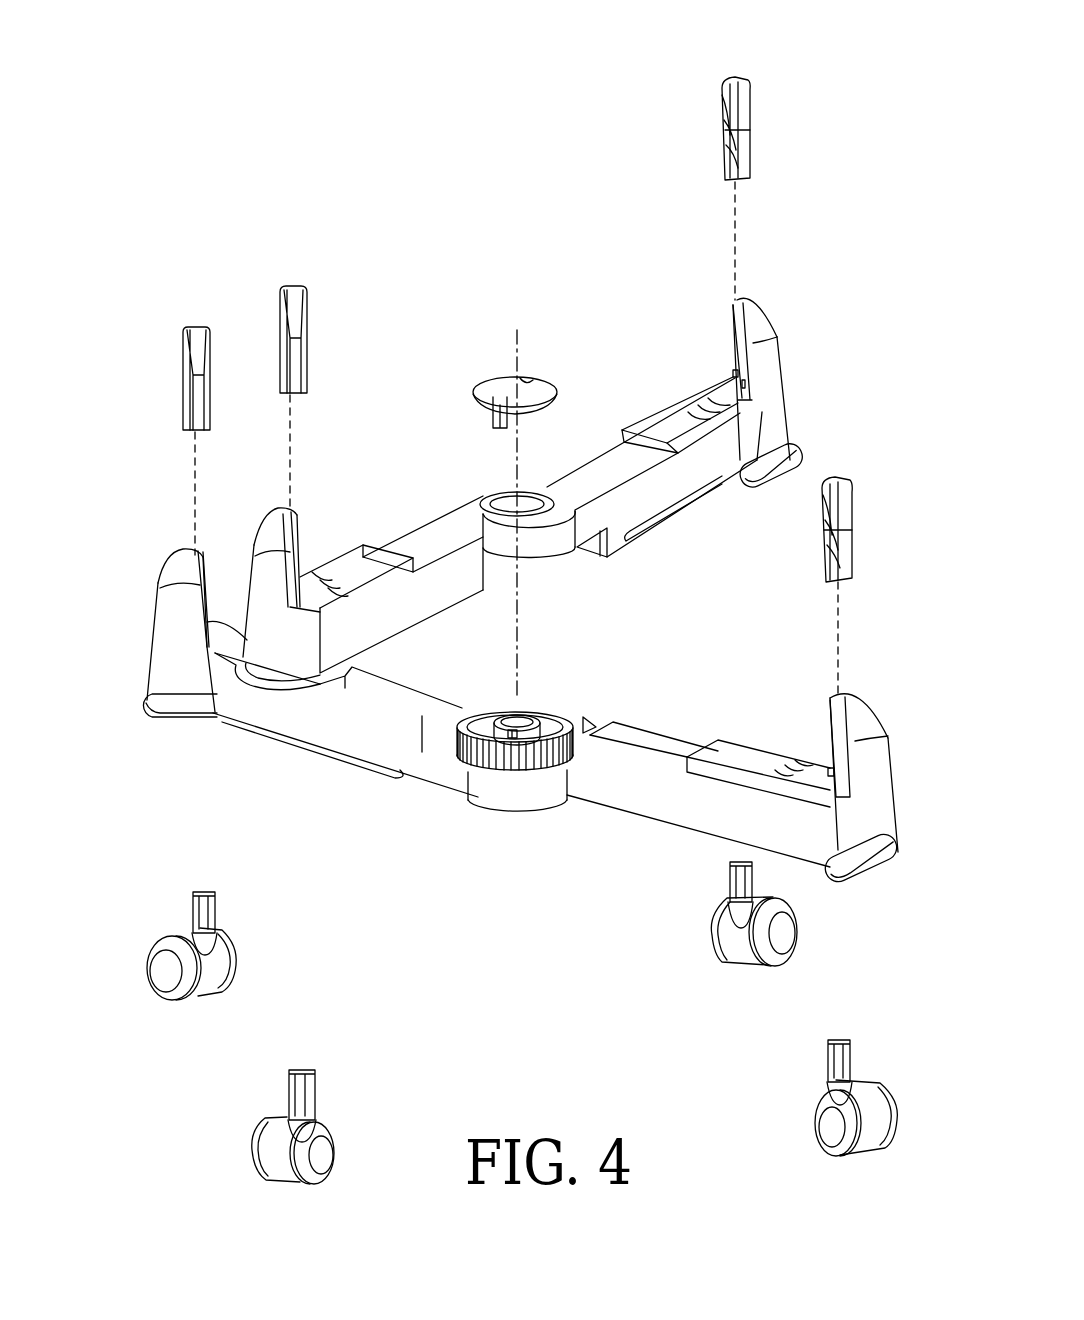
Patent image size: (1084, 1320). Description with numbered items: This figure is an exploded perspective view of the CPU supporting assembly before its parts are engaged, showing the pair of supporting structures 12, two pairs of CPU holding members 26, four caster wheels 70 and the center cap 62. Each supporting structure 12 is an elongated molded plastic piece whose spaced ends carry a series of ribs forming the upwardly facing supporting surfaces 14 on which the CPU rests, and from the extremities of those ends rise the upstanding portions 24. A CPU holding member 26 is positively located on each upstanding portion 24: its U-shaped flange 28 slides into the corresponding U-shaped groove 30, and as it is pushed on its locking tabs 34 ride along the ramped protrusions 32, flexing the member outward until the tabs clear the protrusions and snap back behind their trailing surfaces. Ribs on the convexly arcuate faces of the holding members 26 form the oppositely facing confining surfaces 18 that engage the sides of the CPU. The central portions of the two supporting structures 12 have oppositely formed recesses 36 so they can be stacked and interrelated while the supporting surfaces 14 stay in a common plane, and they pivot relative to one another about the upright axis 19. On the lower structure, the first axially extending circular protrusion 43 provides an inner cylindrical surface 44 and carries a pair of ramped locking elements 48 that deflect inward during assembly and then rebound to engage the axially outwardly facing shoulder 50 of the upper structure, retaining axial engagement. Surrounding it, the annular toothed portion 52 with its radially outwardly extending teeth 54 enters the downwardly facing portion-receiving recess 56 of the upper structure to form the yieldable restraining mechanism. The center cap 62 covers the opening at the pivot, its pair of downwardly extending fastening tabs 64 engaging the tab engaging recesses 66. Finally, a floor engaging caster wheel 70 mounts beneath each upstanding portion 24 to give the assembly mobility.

The supporting structure 12 is at (676, 488).
The upwardly facing supporting surface 14 is at (680, 410).
The confining surface 18 is at (302, 365).
The upright axis 19 is at (518, 333).
The upstanding portion 24 is at (150, 612).
The CPU holding member 26 is at (290, 288).
The U-shaped flange 28 is at (283, 355).
The U-shaped groove 30 is at (292, 510).
The ramped protrusion 32 is at (733, 373).
The locking tab 34 is at (186, 420).
The recess 36 is at (600, 558).
The first axially extending circular protrusion 43 is at (510, 703).
The inner cylindrical surface 44 is at (538, 722).
The ramped locking element 48 is at (500, 768).
The axially outwardly facing shoulder 50 is at (505, 492).
The annular toothed portion 52 is at (480, 712).
The tooth 54 is at (545, 758).
The portion-receiving recess 56 is at (535, 557).
The center cap 62 is at (515, 385).
The fastening tab 64 is at (508, 428).
The tab engaging recess 66 is at (530, 495).
The caster wheel 70 is at (215, 965).